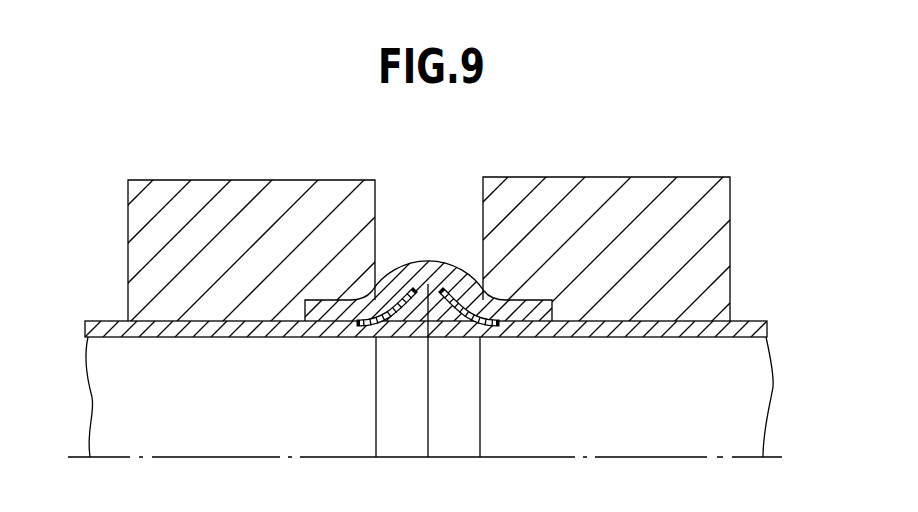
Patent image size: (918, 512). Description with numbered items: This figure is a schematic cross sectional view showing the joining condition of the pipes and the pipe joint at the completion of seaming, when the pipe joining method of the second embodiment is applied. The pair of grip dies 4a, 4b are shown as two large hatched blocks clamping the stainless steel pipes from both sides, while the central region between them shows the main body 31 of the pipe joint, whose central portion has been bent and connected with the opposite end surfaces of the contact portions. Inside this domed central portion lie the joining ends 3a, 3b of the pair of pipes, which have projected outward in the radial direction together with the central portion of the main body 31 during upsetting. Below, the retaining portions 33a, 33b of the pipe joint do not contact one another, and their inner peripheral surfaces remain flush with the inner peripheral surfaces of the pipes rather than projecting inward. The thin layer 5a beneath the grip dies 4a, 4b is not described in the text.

The grip die 4b is at (207, 188).
The grip die 4a is at (605, 182).
The main body 31 is at (428, 272).
The joining end 3b is at (409, 286).
The joining end 3a is at (448, 288).
The substrate plate 5a is at (752, 320).
The retaining portion 33b is at (395, 330).
The retaining portion 33a is at (462, 332).